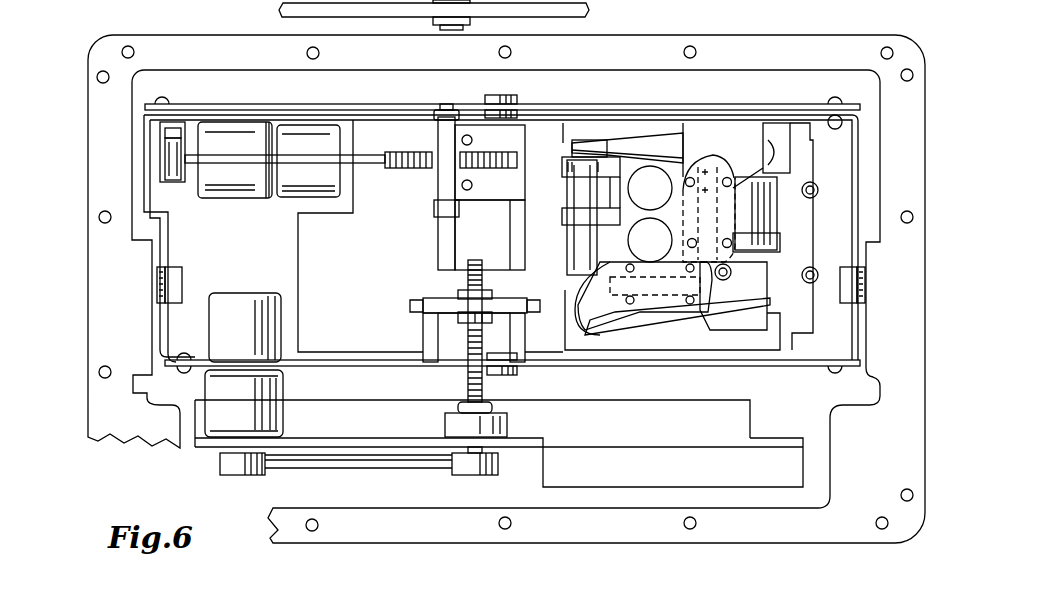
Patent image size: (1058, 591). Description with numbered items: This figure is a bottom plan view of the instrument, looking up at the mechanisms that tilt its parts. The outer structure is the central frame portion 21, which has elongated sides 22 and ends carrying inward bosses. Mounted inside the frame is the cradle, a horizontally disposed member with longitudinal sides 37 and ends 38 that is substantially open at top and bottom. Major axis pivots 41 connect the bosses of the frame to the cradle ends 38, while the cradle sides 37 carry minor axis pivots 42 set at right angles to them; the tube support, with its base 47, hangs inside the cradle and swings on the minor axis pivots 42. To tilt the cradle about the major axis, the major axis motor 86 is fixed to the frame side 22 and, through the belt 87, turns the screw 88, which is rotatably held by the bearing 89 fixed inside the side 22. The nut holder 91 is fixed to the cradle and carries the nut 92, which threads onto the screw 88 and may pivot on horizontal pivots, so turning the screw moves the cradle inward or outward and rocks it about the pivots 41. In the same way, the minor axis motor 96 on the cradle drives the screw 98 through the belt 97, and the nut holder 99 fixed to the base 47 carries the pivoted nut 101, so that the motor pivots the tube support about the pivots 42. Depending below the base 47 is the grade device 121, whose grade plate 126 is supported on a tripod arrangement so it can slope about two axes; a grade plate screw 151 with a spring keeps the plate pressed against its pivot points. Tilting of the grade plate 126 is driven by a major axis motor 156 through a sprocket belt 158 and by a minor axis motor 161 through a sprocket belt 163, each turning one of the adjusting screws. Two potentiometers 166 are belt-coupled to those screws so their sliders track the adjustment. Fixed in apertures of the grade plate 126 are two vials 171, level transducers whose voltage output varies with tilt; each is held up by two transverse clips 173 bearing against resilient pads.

The central frame portion 21 is at (133, 435).
The elongated side 22 is at (308, 452).
The longitudinal side 37 is at (320, 105).
The end 38 is at (860, 165).
The major axis pivot 41 is at (156, 292).
The minor axis pivot 42 is at (518, 98).
The base 47 is at (360, 321).
The major axis motor 86 is at (238, 315).
The belt 87 is at (360, 470).
The screw 88 is at (492, 265).
The bearing 89 is at (455, 426).
The nut holder 91 is at (455, 300).
The nut 92 is at (452, 300).
The minor axis motor 96 is at (252, 190).
The belt 97 is at (182, 180).
The screw 98 is at (368, 168).
The nut holder 99 is at (442, 190).
The nut 101 is at (438, 140).
The grade device 121 is at (722, 140).
The grade plate 126 is at (752, 321).
The grade plate screw 151 is at (732, 278).
The major axis motor 156 is at (585, 248).
The sprocket belt 158 is at (640, 140).
The minor axis motor 161 is at (760, 208).
The sprocket belt 163 is at (672, 338).
The potentiometer 166 is at (666, 199).
The vial 171 is at (651, 320).
The transverse clip 173 is at (688, 142).